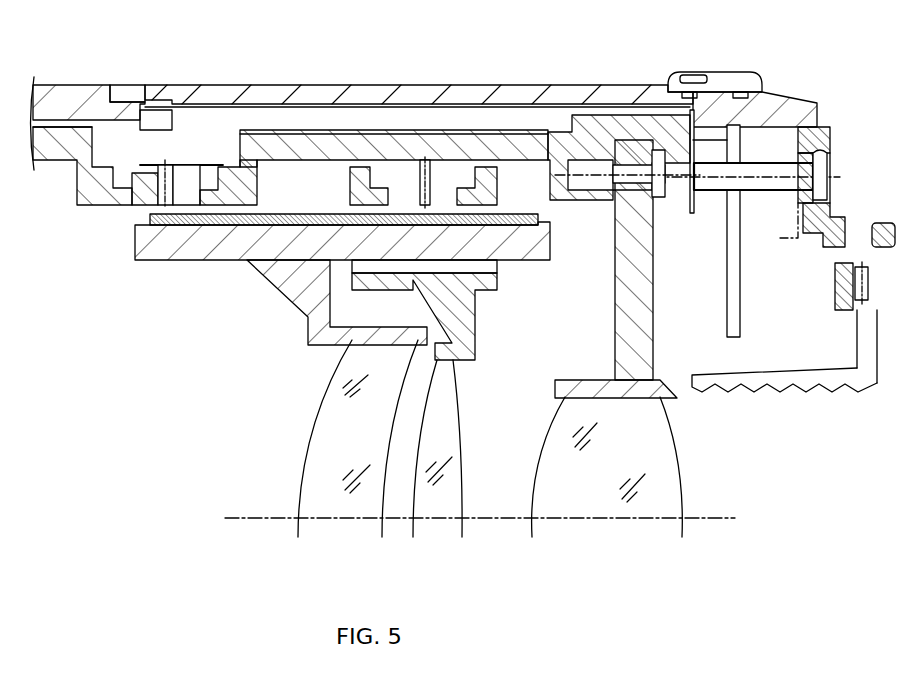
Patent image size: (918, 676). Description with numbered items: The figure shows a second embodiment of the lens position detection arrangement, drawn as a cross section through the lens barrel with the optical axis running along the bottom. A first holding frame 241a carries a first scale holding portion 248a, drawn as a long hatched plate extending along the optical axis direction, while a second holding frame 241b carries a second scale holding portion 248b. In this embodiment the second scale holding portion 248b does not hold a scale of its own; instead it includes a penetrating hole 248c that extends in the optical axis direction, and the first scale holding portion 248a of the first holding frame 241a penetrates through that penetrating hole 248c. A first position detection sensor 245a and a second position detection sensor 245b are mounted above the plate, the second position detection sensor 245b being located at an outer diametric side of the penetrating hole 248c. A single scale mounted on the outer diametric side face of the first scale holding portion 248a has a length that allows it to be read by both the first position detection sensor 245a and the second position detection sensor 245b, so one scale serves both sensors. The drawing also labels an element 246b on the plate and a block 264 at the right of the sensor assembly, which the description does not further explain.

The first position detection sensor 245a is at (197, 172).
The second position detection sensor 245b is at (458, 173).
The thin plate member 246b is at (303, 222).
The fixing block 264 is at (618, 130).
The first scale holding portion 248a is at (213, 250).
The second scale holding portion 248b is at (493, 280).
The penetrating hole 248c is at (480, 267).
The first holding frame 241a is at (274, 358).
The second holding frame 241b is at (477, 340).